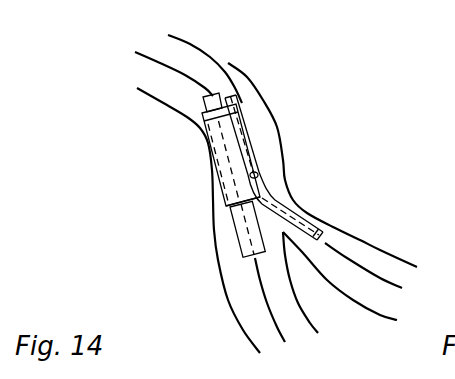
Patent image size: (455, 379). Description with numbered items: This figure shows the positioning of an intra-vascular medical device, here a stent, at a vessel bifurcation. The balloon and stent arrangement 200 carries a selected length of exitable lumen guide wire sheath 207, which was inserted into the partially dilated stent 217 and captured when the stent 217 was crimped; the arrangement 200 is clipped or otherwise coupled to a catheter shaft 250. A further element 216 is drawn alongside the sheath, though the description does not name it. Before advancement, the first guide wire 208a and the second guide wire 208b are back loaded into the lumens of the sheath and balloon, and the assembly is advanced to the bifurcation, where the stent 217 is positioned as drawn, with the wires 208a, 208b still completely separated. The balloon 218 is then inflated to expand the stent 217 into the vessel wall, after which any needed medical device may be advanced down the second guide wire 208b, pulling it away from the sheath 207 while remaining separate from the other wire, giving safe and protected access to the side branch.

The balloon and stent arrangement 200 is at (243, 176).
The exitable lumen guide wire sheath 207 is at (273, 200).
The first guide wire 208a is at (183, 73).
The second guide wire 208b is at (197, 45).
The guide tube 216 is at (295, 167).
The stent 217 is at (215, 172).
The balloon 218 is at (220, 208).
The catheter shaft 250 is at (243, 252).